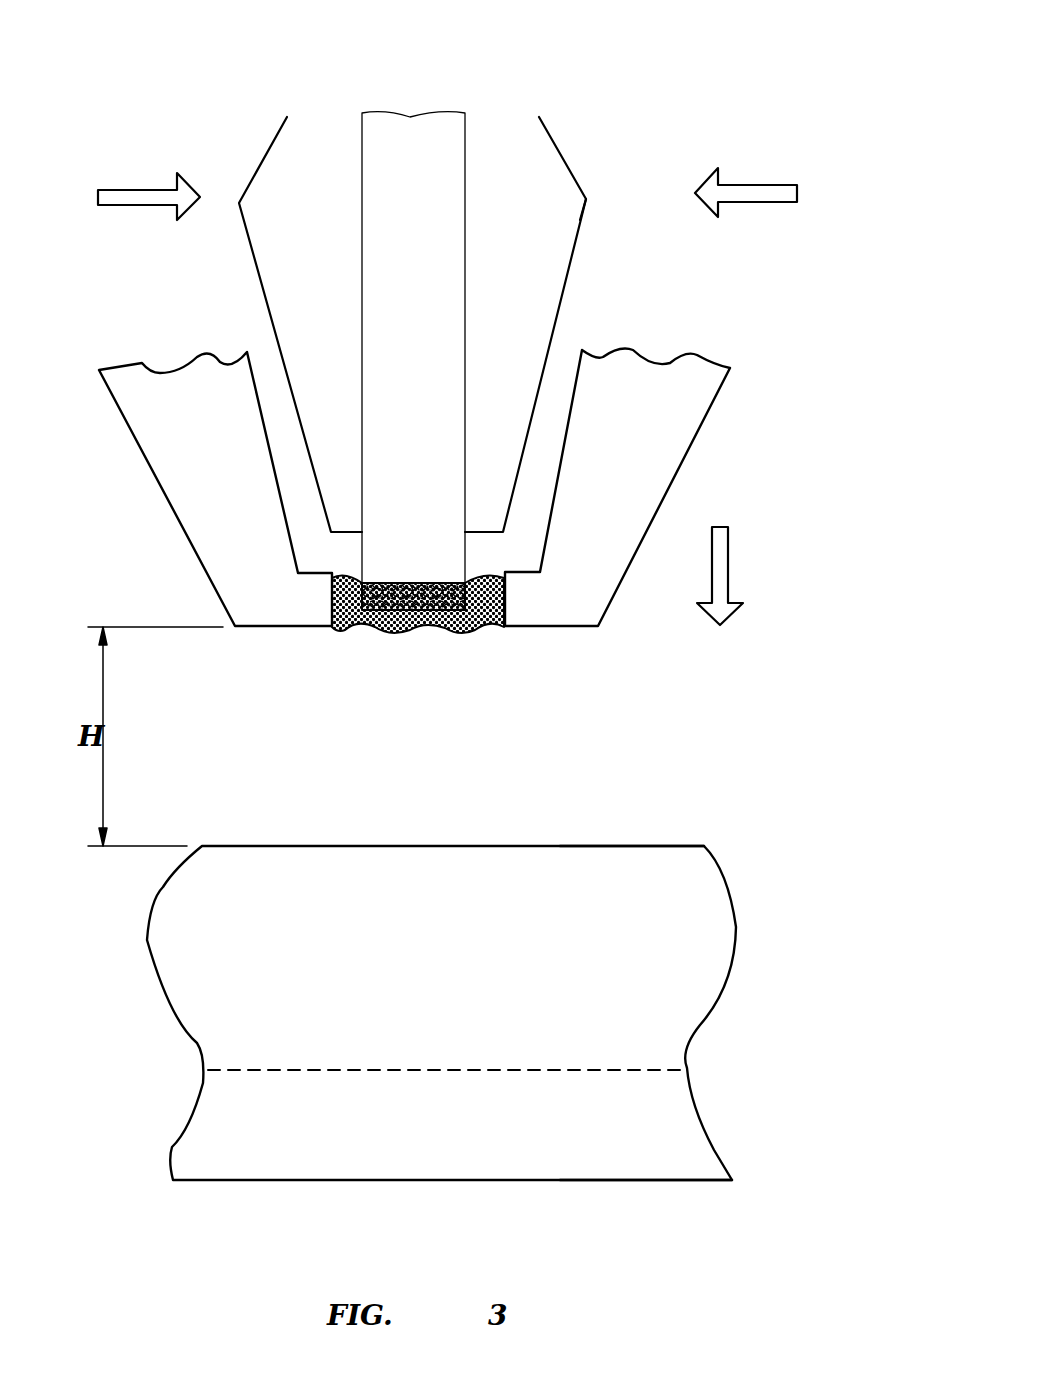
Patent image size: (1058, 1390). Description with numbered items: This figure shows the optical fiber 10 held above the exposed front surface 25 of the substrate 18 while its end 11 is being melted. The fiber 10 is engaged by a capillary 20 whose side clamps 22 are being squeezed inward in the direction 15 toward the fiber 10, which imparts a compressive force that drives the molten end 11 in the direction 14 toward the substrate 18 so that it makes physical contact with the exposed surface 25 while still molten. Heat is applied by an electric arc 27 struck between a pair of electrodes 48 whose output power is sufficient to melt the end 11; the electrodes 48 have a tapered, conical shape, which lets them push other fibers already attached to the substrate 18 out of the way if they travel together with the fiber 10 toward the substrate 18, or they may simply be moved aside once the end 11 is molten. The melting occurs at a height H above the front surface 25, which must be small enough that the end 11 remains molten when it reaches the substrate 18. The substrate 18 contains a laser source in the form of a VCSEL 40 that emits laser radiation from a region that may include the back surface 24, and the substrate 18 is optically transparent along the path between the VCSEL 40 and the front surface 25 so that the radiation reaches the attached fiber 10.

The optical fiber 10 is at (409, 105).
The end of the optical fiber 11 is at (413, 598).
The direction 14 is at (723, 556).
The direction 15 is at (137, 195).
The substrate 18 is at (787, 992).
The capillary 20 is at (565, 135).
The side clamps 22 is at (586, 199).
The back surface of the substrate 24 is at (645, 1180).
The front surface (exposed surface) of the substrate 25 is at (641, 846).
The electric arc 27 is at (485, 608).
The laser source (VCSEL) 40 is at (488, 1141).
The electrodes 48 is at (268, 572).